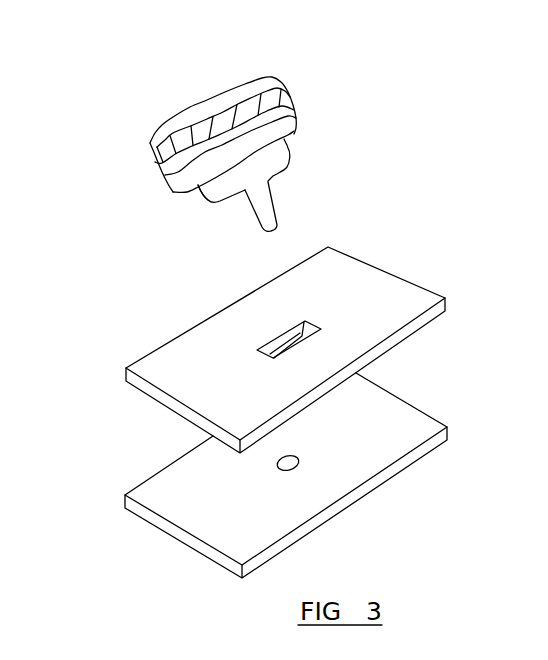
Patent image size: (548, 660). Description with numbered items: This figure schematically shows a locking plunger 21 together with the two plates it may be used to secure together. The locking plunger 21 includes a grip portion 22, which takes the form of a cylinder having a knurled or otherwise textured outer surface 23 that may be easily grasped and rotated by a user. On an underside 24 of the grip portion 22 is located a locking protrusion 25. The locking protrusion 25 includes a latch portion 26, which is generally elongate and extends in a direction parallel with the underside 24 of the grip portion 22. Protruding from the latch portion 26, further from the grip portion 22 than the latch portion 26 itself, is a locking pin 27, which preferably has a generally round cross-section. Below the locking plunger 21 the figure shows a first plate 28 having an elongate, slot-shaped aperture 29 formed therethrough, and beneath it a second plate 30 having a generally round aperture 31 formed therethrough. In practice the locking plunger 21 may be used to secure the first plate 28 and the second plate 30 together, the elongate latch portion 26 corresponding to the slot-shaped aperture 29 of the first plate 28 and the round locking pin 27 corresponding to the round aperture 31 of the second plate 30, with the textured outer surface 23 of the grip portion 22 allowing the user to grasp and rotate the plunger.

The locking plunger 21 is at (303, 107).
The grip portion 22 is at (222, 113).
The textured outer surface 23 is at (155, 160).
The underside 24 is at (188, 186).
The locking protrusion 25 is at (303, 163).
The latch portion 26 is at (232, 178).
The locking pin 27 is at (272, 210).
The first plate 28 is at (173, 383).
The slot-shaped aperture 29 is at (320, 327).
The second plate 30 is at (192, 503).
The round aperture 31 is at (298, 462).